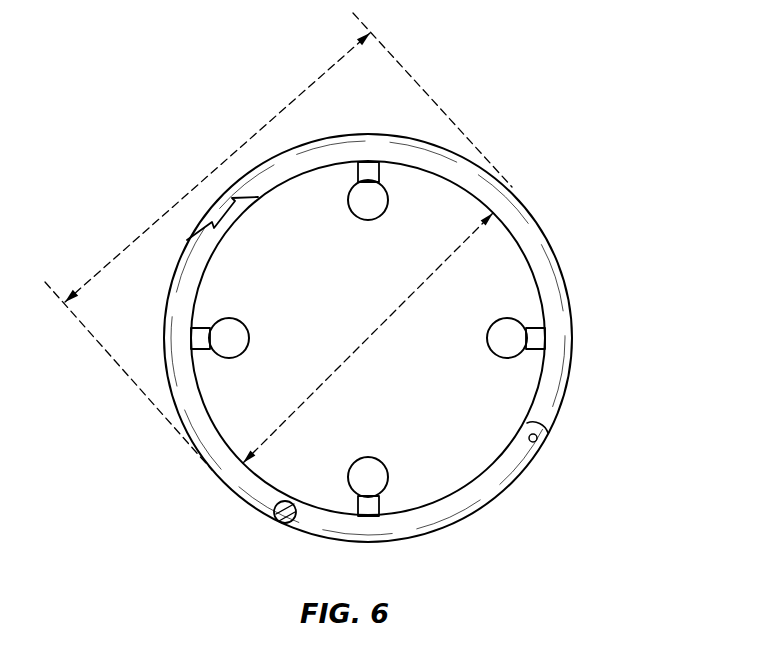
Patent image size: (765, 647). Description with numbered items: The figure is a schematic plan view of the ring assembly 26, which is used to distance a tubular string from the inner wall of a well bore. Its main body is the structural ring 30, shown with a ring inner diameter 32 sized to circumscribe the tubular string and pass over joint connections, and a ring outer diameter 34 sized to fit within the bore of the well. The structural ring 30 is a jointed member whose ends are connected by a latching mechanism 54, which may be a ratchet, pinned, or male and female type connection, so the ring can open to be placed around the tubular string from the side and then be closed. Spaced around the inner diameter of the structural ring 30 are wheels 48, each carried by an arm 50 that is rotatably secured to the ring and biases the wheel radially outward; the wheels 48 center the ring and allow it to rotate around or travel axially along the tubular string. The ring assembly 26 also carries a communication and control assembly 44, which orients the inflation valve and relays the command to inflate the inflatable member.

The ring assembly 26 is at (546, 191).
The structural ring 30 is at (563, 337).
The ring inner diameter 32 is at (367, 340).
The ring outer diameter 34 is at (220, 165).
The communication and control assembly 44 is at (285, 524).
The wheels 48 is at (507, 318).
The arms 50 is at (358, 508).
The latching mechanism 54 is at (242, 228).